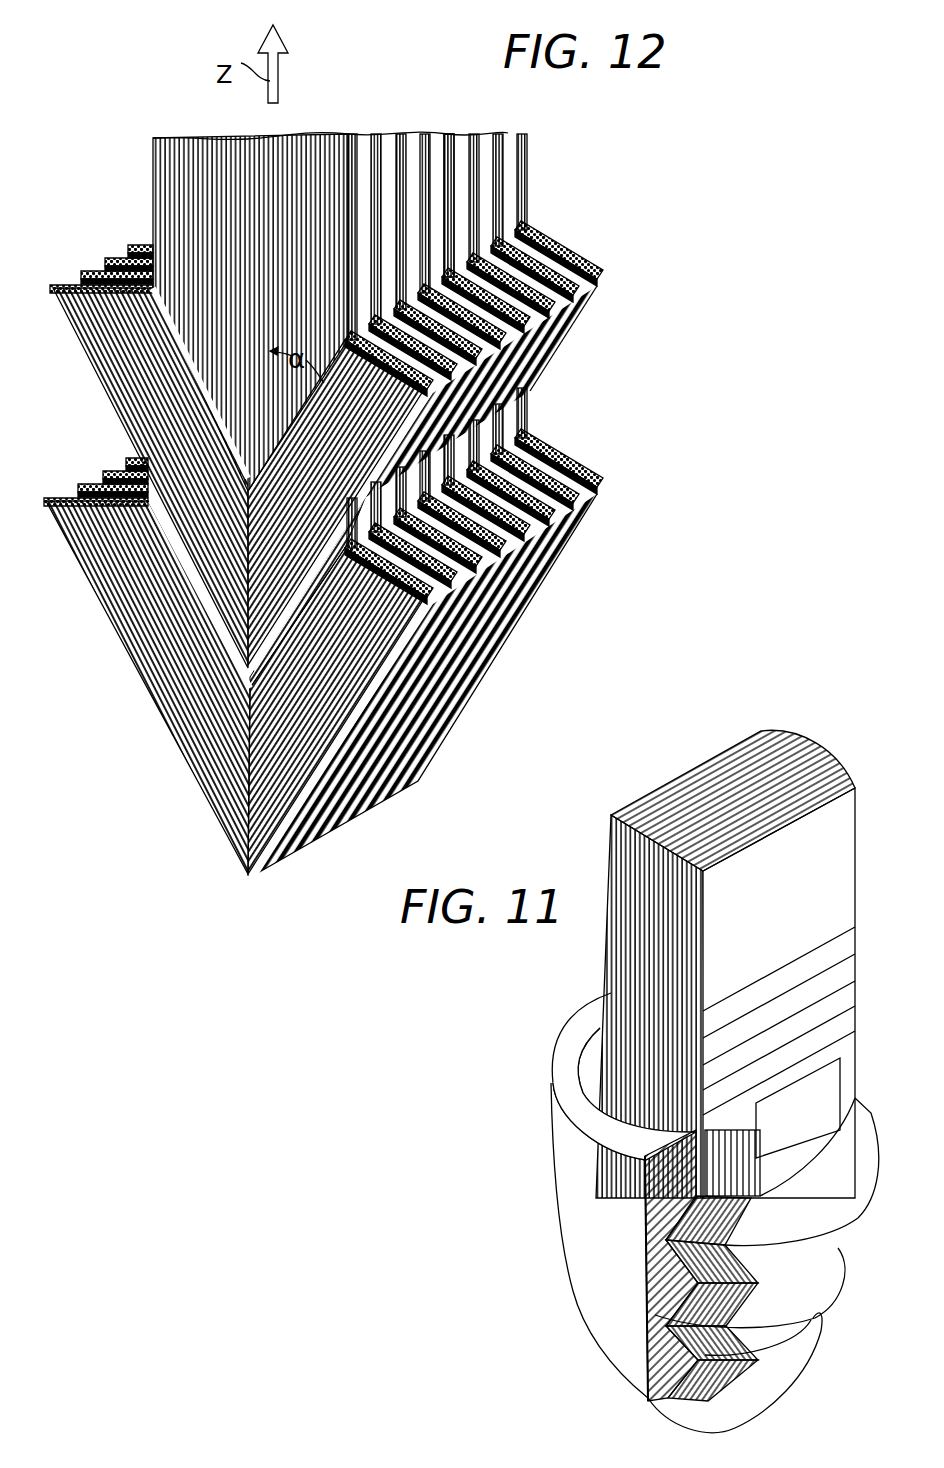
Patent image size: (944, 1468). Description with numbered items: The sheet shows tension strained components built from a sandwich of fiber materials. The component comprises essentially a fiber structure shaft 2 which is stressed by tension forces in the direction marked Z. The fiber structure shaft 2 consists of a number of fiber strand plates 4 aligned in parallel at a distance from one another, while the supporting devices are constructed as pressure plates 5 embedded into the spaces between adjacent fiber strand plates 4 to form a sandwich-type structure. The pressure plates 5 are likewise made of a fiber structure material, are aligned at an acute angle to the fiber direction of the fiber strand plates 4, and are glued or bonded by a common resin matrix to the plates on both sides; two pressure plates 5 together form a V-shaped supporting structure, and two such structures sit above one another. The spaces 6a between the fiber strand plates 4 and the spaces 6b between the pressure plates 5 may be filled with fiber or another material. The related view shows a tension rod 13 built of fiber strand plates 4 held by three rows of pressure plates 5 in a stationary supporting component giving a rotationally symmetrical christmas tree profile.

In FIG. 12, the fiber structure shaft 2 is at (332, 473).
In FIG. 12, the fiber strand plates 4 is at (418, 126).
In FIG. 11, the fiber strand plates 4 is at (726, 940).
In FIG. 12, the pressure plates 5 is at (112, 372).
In FIG. 11, the pressure plates 5 is at (845, 1220).
In FIG. 12, the spaces between the fiber strand plates 6a is at (452, 128).
In FIG. 12, the spaces between the pressure plates 6b is at (540, 472).
In FIG. 11, the tension rod 13 is at (721, 737).